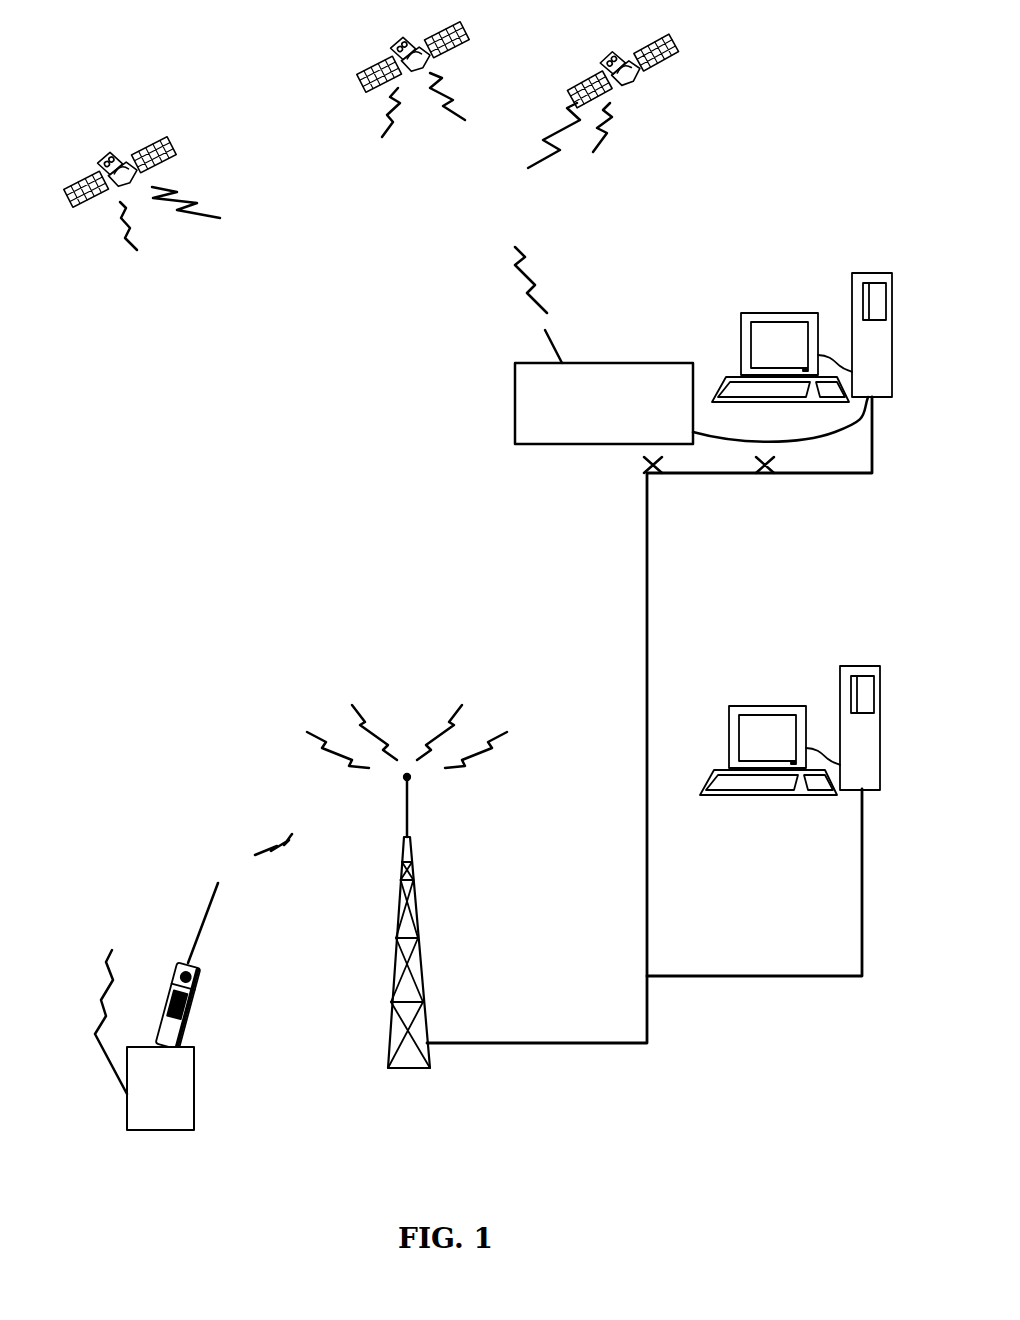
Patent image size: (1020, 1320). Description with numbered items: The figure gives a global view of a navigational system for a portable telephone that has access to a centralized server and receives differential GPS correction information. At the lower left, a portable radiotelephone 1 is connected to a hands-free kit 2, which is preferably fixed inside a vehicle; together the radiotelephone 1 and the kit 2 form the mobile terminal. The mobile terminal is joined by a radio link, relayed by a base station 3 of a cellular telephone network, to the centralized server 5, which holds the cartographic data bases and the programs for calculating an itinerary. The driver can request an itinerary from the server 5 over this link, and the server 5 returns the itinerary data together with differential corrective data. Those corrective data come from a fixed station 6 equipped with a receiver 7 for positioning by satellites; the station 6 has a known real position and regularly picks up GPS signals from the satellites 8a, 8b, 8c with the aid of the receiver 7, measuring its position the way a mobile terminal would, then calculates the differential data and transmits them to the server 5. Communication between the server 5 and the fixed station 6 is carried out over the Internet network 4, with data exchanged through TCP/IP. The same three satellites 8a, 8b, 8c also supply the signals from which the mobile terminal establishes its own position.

The portable radiotelephone 1 is at (224, 942).
The hands-free kit 2 is at (128, 1040).
The base station 3 is at (407, 886).
The Internet network 4 is at (649, 720).
The centralized server 5 is at (803, 750).
The fixed station 6 is at (792, 350).
The receiver 7 is at (604, 345).
The satellite 8a is at (138, 184).
The satellite 8b is at (410, 74).
The satellite 8c is at (604, 86).